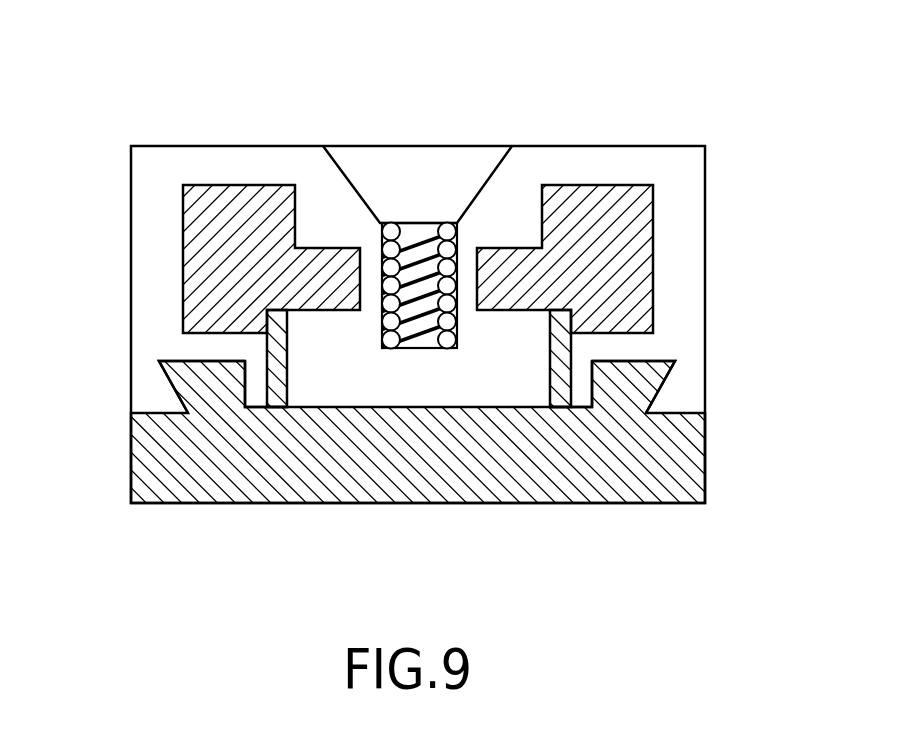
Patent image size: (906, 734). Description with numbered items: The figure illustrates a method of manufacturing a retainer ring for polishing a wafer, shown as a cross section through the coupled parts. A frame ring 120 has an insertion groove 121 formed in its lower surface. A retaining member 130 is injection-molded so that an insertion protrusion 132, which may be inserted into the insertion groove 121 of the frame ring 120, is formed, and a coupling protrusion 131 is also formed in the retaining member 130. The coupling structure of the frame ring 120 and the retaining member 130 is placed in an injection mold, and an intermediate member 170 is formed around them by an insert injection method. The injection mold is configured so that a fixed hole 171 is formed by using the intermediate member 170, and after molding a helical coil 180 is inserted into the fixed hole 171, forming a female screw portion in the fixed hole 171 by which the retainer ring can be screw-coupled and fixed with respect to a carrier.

The frame ring 120 is at (232, 176).
The insertion groove 121 is at (275, 322).
The retaining member 130 is at (242, 513).
The coupling protrusion 131 is at (188, 373).
The insertion protrusion 132 is at (282, 370).
The intermediate member 170 is at (124, 262).
The fixed hole 171 is at (384, 270).
The helical coil 180 is at (393, 223).